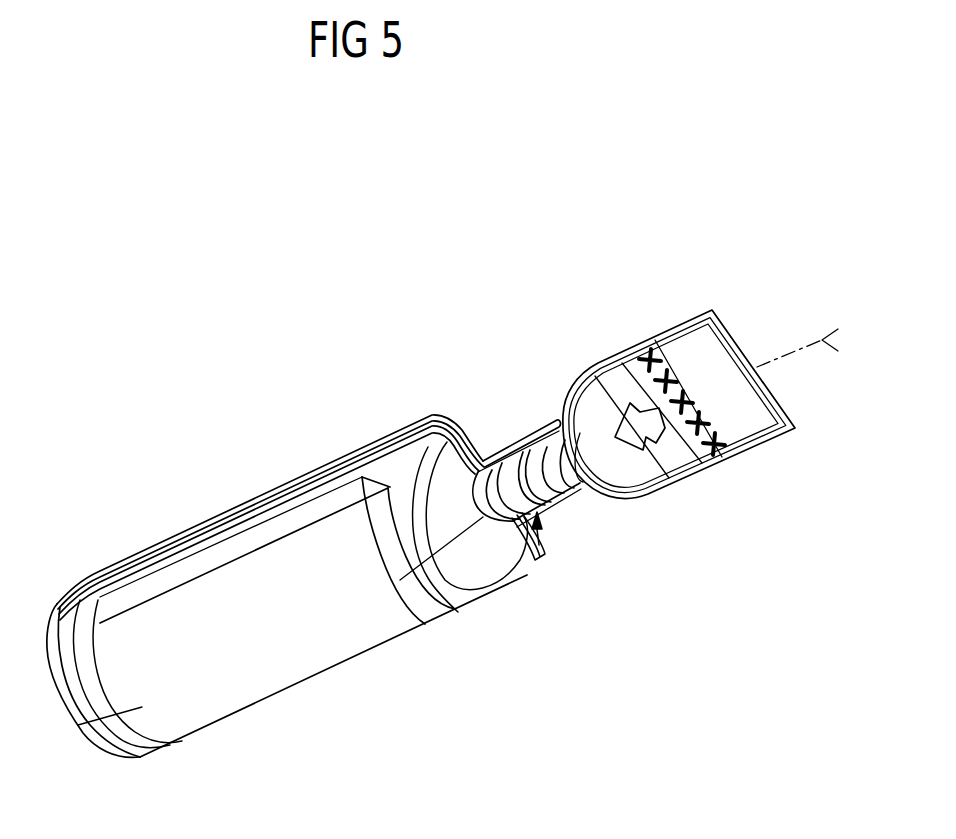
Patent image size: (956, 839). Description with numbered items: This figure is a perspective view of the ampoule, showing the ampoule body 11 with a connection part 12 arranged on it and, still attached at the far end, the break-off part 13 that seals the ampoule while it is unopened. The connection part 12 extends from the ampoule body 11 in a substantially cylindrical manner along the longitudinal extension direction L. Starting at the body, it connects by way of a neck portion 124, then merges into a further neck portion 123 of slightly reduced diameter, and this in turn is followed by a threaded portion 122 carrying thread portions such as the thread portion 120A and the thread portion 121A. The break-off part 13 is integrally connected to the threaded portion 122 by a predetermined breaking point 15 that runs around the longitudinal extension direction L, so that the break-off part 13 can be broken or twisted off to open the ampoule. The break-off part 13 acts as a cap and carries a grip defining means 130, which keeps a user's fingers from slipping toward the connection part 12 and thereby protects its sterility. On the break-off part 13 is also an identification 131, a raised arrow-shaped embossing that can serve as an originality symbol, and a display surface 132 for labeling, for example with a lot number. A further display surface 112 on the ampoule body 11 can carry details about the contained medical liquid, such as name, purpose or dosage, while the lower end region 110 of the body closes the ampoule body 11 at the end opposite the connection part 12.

The ampoule body 11 is at (145, 757).
The bottom rim of container 110 is at (80, 728).
The display surface 112 is at (318, 655).
The connection part 12 is at (533, 571).
The thread portion 120A is at (587, 482).
The thread portion 121A is at (560, 500).
The threaded portion 122 is at (540, 442).
The neck portion 123 is at (508, 470).
The neck portion 124 is at (485, 477).
The break-off part 13 is at (676, 328).
The grip defining means 130 is at (592, 407).
The identification 131 is at (645, 420).
The display surface 132 is at (757, 422).
The predetermined breaking point 15 is at (560, 417).
The longitudinal extension direction L is at (806, 348).